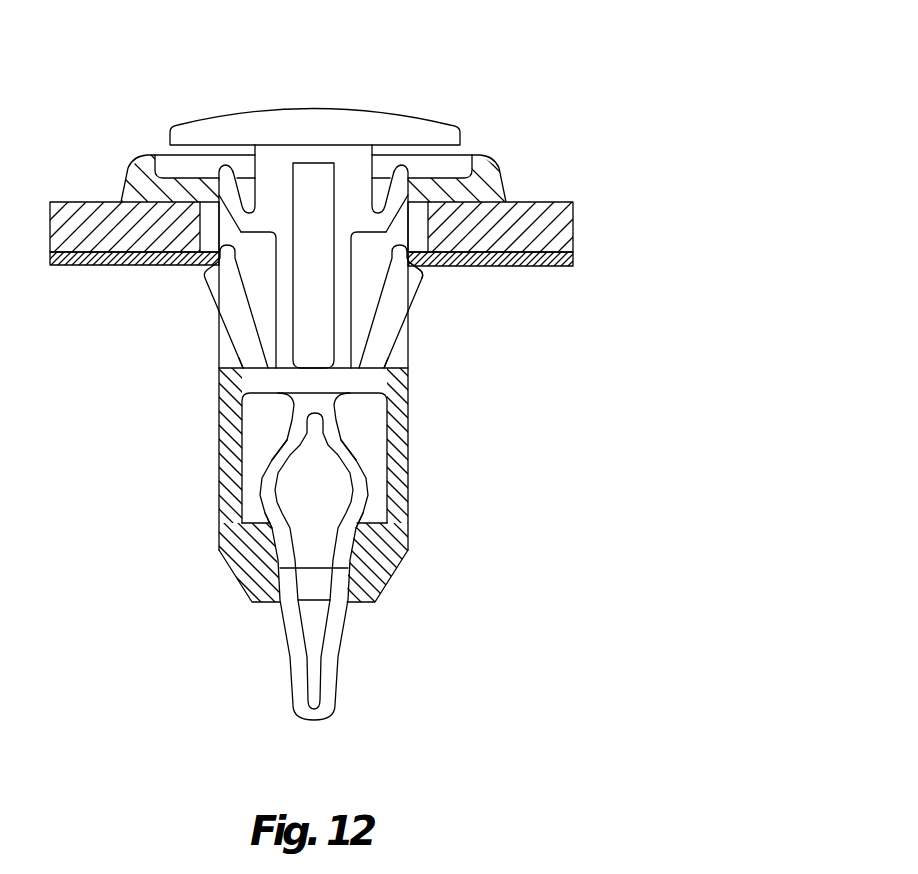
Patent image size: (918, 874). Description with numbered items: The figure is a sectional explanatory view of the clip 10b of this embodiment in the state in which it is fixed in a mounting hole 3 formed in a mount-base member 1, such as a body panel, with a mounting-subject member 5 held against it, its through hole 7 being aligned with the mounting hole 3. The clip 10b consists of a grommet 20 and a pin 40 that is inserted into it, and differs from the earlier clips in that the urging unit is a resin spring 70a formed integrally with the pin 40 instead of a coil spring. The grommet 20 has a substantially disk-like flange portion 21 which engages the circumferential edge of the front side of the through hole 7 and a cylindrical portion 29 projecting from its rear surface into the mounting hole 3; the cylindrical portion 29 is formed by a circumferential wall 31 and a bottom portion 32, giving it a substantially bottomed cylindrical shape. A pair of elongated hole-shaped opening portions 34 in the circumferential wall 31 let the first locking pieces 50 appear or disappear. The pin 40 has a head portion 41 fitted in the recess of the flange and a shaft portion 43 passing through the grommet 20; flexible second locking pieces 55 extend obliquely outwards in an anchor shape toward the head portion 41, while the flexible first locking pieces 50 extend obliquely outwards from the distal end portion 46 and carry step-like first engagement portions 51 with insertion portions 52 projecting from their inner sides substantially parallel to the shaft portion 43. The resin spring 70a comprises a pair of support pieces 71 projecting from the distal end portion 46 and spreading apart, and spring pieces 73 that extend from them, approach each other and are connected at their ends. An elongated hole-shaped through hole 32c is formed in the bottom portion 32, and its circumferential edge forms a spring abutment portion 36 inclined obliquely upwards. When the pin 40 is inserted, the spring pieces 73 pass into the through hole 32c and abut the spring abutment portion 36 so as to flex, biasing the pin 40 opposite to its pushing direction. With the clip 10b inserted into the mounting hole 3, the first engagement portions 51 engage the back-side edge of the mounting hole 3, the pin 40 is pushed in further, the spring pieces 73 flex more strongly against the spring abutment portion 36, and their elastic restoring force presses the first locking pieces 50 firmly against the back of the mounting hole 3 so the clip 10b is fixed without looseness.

The clip 10b is at (337, 374).
The pin 40 is at (337, 120).
The head portion 41 is at (248, 120).
The second locking pieces 55 is at (213, 178).
The grommet 20 is at (535, 160).
The flange portion 21 is at (135, 163).
The through hole 7 is at (574, 215).
The mounting-subject member 5 is at (574, 243).
The mounting hole 3 is at (436, 270).
The mount-base member 1 is at (320, 260).
The first engagement portions 51 is at (406, 266).
The insertion portions 52 is at (414, 276).
The shaft portion 43 is at (255, 293).
The first locking pieces 50 is at (322, 306).
The opening portions 34 is at (244, 364).
The distal end portion 46 is at (378, 382).
The support pieces 71 is at (282, 450).
The resin spring 70a is at (333, 556).
The cylindrical portion 29 is at (225, 516).
The circumferential wall 31 is at (400, 497).
The spring pieces 73 is at (270, 525).
The spring abutment portion 36 is at (265, 568).
The bottom portion 32 is at (262, 587).
The through hole 32c is at (272, 605).